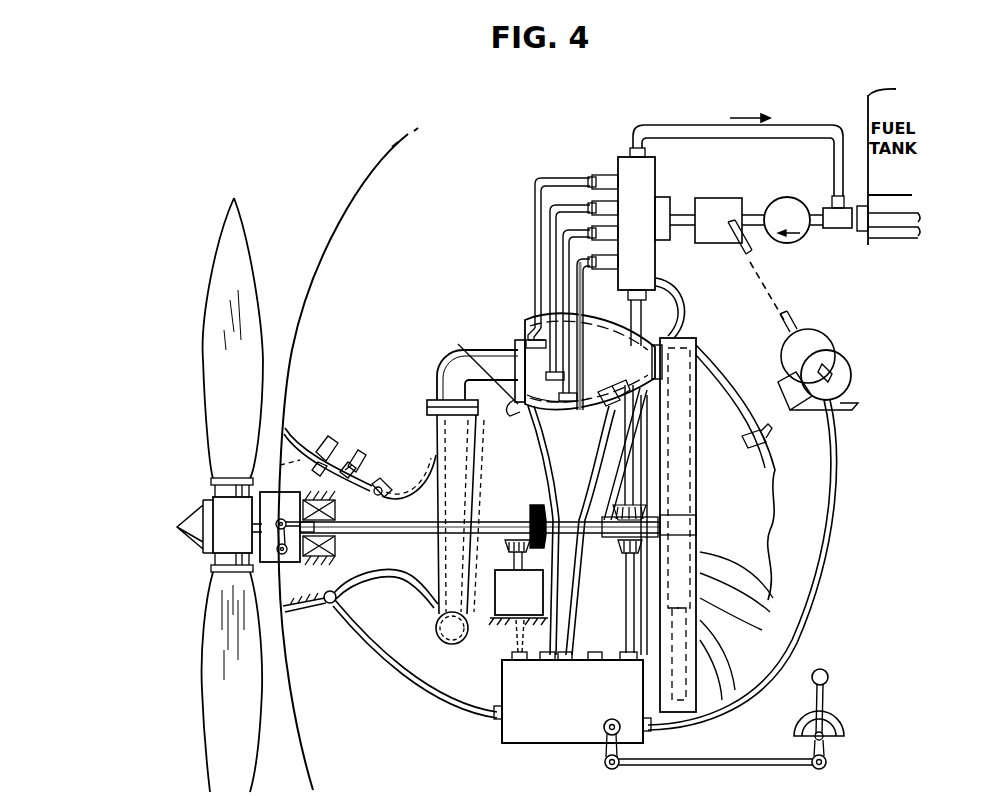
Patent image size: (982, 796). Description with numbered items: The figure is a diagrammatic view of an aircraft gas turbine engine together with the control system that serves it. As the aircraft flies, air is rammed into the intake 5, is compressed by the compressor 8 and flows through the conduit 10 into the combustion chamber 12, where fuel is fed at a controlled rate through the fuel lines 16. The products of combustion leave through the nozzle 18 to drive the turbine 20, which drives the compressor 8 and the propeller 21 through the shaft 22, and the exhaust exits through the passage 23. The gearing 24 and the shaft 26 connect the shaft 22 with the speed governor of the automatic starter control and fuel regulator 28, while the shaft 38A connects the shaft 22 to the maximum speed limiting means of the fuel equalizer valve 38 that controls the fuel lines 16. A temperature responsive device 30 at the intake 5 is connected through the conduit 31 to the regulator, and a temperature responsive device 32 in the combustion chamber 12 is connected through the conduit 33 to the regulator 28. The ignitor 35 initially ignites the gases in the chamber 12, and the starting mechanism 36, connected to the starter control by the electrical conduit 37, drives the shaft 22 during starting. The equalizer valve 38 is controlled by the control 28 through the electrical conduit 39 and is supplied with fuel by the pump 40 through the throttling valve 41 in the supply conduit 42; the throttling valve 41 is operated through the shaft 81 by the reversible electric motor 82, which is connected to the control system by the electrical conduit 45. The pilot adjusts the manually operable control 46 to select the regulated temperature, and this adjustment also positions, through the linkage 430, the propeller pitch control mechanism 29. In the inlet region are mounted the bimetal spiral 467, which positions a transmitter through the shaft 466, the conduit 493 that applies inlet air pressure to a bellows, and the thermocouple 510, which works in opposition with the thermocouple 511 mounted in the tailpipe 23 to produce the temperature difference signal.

The propeller 21 is at (253, 256).
The propeller pitch control mechanism 29 is at (289, 492).
The linkage 430 is at (288, 514).
The intake 5 is at (284, 463).
The shaft 466 is at (324, 446).
The conduit 493 is at (352, 460).
The bimetal spiral 467 is at (347, 470).
The thermocouple 510 is at (385, 485).
The compressor 8 is at (437, 452).
The conduit 10 is at (446, 371).
The ignitor 35 is at (516, 404).
The combustion chamber 12 is at (588, 320).
The fuel lines 16 is at (578, 272).
The fuel equalizer valve 38 is at (628, 209).
The supply conduit 42 is at (680, 212).
The throttling valve 41 is at (713, 198).
The pump 40 is at (785, 199).
The shaft 81 is at (766, 290).
The reversible electric motor 82 is at (824, 338).
The electrical conduit 39 is at (681, 303).
The turbine 20 is at (684, 378).
The exhaust passage 23 is at (732, 428).
The thermocouple 511 is at (745, 442).
The shaft 38A is at (636, 470).
The nozzle 18 is at (647, 392).
The temperature responsive device 32 is at (608, 388).
The conduit 33 is at (592, 460).
The shaft 22 is at (506, 518).
The gearing 24 is at (627, 552).
The shaft 26 is at (628, 620).
The temperature responsive device 30 is at (336, 584).
The conduit 31 is at (386, 668).
The starting mechanism 36 is at (512, 610).
The electrical conduit 37 is at (512, 636).
The automatic starter control and fuel regulator 28 is at (563, 734).
The electrical conduit 45 is at (836, 527).
The manually operable control 46 is at (826, 699).